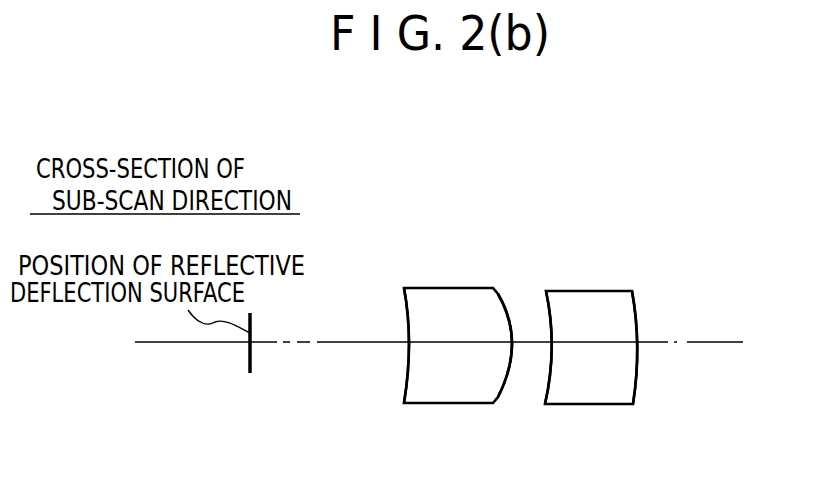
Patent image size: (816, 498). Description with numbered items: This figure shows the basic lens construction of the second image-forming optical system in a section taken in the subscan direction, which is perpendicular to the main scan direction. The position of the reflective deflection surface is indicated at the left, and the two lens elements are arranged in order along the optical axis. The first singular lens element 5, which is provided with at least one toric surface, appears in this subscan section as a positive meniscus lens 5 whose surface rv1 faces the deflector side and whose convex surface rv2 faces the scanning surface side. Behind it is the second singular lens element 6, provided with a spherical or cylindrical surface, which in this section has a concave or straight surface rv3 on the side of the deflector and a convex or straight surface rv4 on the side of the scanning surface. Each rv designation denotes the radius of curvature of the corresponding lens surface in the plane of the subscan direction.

The first singular lens element 5 is at (455, 403).
The second singular lens element 6 is at (593, 404).
The radius of curvature of the deflector-side surface of the first lens in the subsc rv1 is at (404, 292).
The convex surface of the first lens on the scanning surface side in the subscan dir rv2 is at (496, 296).
The concave or straight surface of the second lens on the deflector side in the subs rv3 is at (550, 293).
The convex or straight surface of the second lens on the scanning surface side in th rv4 is at (637, 300).